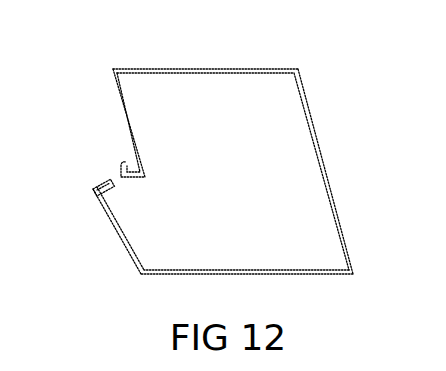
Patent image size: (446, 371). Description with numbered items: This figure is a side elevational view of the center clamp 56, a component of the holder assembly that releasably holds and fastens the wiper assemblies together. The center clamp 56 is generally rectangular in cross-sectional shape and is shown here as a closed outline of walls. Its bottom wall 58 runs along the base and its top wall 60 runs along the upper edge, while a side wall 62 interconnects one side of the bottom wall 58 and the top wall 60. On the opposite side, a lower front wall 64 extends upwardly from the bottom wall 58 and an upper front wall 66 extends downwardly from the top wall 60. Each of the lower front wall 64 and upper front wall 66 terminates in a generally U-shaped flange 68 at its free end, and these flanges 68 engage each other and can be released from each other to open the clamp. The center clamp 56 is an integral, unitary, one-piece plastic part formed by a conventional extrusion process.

The center clamp 56 is at (223, 170).
The bottom wall 58 is at (247, 275).
The top wall 60 is at (208, 68).
The side wall 62 is at (327, 170).
The lower front wall 64 is at (118, 233).
The upper front wall 66 is at (126, 123).
The flange 68 is at (134, 168).